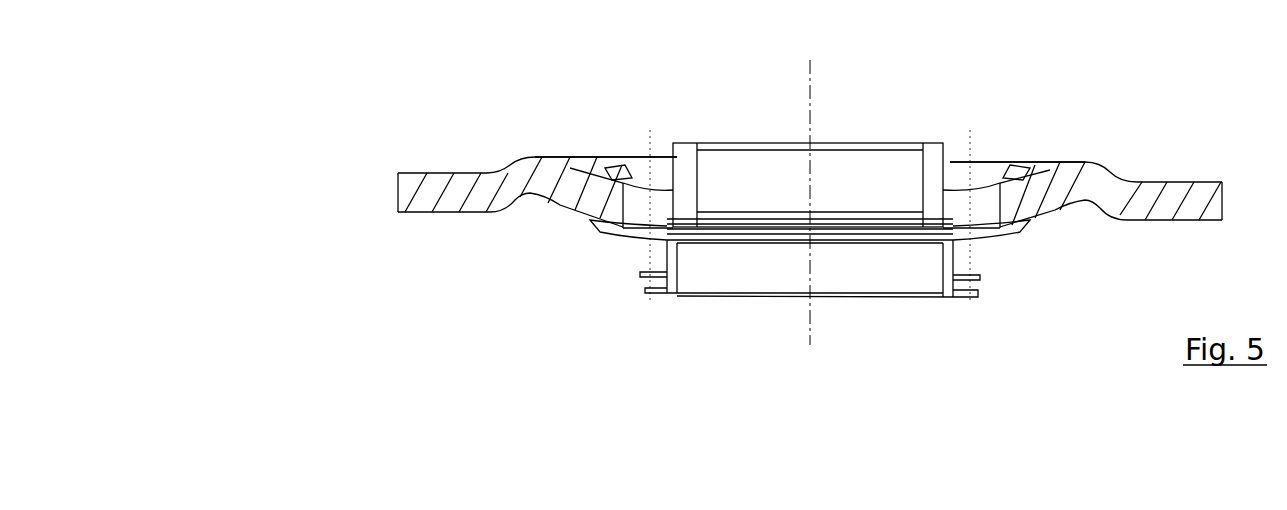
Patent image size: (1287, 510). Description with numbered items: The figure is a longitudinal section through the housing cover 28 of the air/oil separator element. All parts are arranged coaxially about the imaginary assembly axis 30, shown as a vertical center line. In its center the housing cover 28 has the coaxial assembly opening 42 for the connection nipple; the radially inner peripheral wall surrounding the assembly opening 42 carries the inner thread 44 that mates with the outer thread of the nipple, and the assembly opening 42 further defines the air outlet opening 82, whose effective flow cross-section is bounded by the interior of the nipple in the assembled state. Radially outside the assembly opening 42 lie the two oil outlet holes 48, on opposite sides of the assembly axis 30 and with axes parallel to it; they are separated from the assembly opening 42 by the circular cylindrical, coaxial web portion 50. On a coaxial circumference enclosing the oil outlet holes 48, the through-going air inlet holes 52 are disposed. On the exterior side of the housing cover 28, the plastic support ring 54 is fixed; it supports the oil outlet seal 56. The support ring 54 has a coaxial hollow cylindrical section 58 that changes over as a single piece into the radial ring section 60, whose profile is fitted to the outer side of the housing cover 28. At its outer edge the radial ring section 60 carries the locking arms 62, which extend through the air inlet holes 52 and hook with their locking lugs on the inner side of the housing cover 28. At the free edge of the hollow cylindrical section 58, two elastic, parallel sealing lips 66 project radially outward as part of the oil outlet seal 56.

The housing cover 28 is at (424, 150).
The assembly axis 30 is at (803, 68).
The assembly opening 42 is at (790, 137).
The inner thread 44 is at (925, 172).
The oil outlet holes 48 is at (663, 204).
The web portion 50 is at (683, 160).
The air inlet holes 52 is at (585, 160).
The support ring 54 is at (809, 308).
The oil outlet seal 56 is at (972, 287).
The hollow cylindrical section 58 is at (720, 283).
The radial ring section 60 is at (1005, 238).
The locking arms 62 is at (613, 160).
The sealing lips 66 is at (640, 272).
The air outlet opening 82 is at (838, 160).